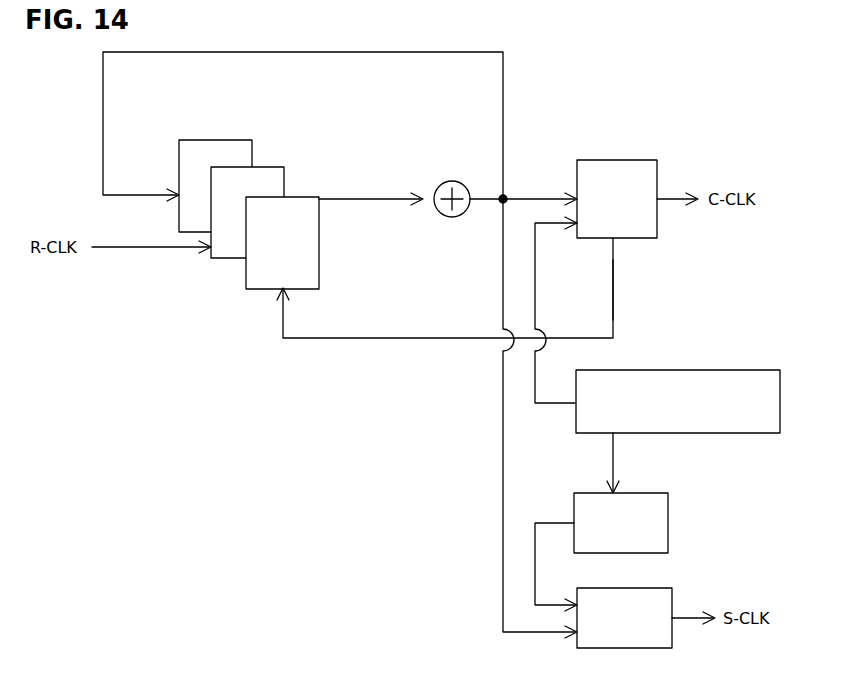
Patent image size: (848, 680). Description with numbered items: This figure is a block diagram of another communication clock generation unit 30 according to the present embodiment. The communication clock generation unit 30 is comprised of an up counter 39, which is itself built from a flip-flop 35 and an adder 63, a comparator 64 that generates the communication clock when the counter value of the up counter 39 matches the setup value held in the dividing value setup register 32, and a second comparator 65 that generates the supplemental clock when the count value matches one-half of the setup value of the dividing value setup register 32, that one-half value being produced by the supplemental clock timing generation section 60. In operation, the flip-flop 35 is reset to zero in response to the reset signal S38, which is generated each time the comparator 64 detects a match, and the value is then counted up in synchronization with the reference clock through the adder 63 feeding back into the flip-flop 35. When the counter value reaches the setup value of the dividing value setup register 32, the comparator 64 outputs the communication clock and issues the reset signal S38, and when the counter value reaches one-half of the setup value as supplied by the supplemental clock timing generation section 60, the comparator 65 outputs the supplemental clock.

The communication clock generation unit 30 is at (542, 83).
The flip-flop 35 is at (218, 139).
The up counter 39 is at (365, 245).
The adder 63 is at (448, 189).
The comparator 64 is at (637, 187).
The reset signal S38 is at (635, 290).
The dividing value setup register 32 is at (678, 421).
The supplemental clock timing generation section 60 is at (616, 552).
The comparator 65 is at (646, 614).